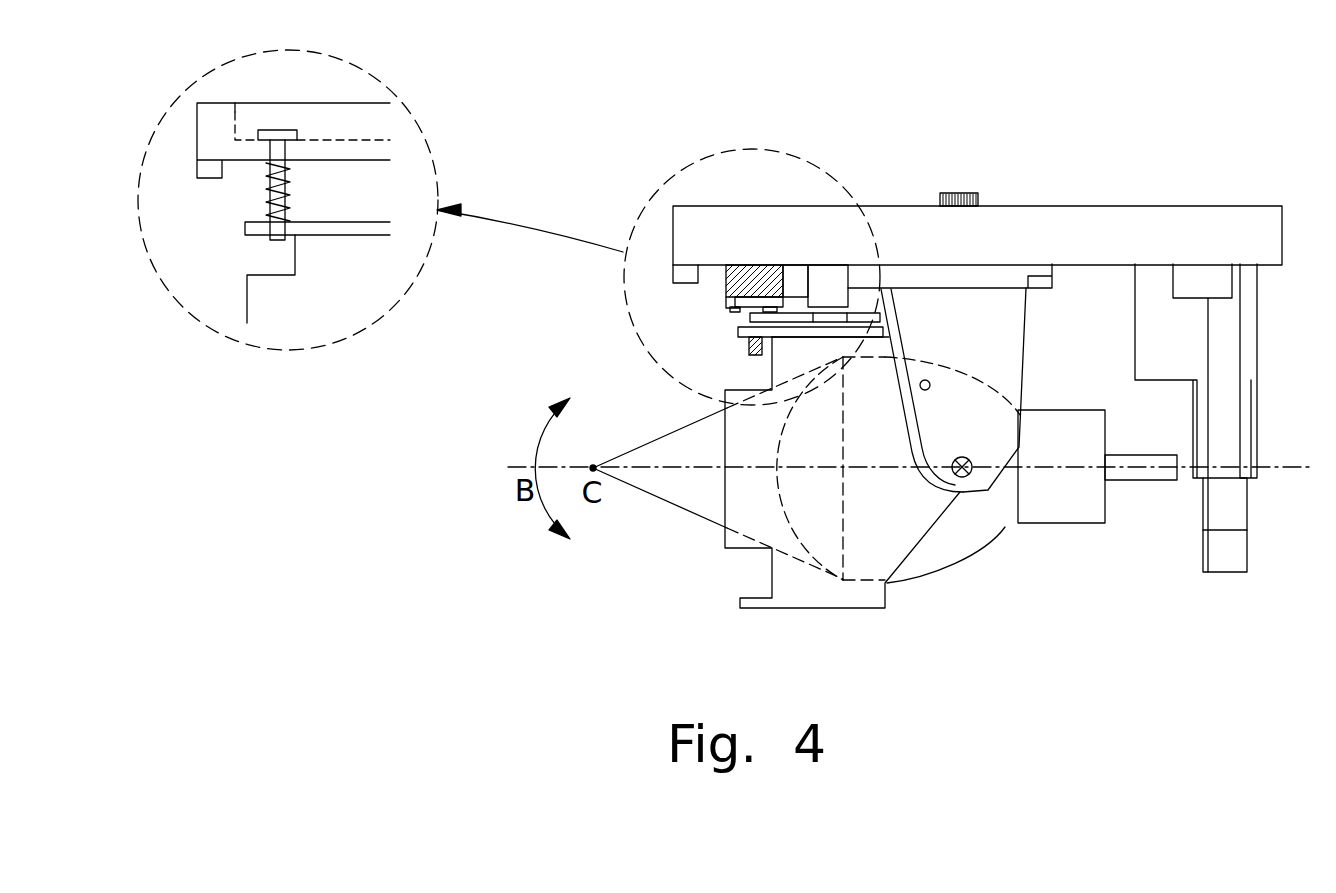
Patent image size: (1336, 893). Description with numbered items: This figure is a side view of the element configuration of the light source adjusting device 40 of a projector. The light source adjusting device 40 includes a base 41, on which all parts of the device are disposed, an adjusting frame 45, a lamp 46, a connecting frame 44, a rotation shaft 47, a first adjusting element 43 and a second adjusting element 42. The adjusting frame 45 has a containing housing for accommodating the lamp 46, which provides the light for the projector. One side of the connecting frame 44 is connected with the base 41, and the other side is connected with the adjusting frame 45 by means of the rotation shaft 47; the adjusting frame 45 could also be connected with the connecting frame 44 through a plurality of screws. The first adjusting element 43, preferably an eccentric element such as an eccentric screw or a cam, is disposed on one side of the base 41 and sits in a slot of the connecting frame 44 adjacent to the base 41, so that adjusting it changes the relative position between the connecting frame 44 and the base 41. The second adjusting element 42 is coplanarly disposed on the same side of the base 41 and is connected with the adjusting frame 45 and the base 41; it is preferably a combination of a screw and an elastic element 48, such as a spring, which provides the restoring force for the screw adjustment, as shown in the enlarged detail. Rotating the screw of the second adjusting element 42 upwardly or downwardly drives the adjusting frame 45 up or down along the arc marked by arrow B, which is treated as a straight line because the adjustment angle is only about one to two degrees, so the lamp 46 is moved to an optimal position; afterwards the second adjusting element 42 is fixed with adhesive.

The light source adjusting device 40 is at (1080, 98).
The base 41 is at (1162, 220).
The second adjusting element 42 is at (743, 318).
The first adjusting element 43 is at (958, 194).
The connecting frame 44 is at (1000, 347).
The adjusting frame 45 is at (807, 585).
The lamp 46 is at (927, 560).
The rotation shaft 47 is at (965, 476).
The elastic element 48 is at (268, 182).